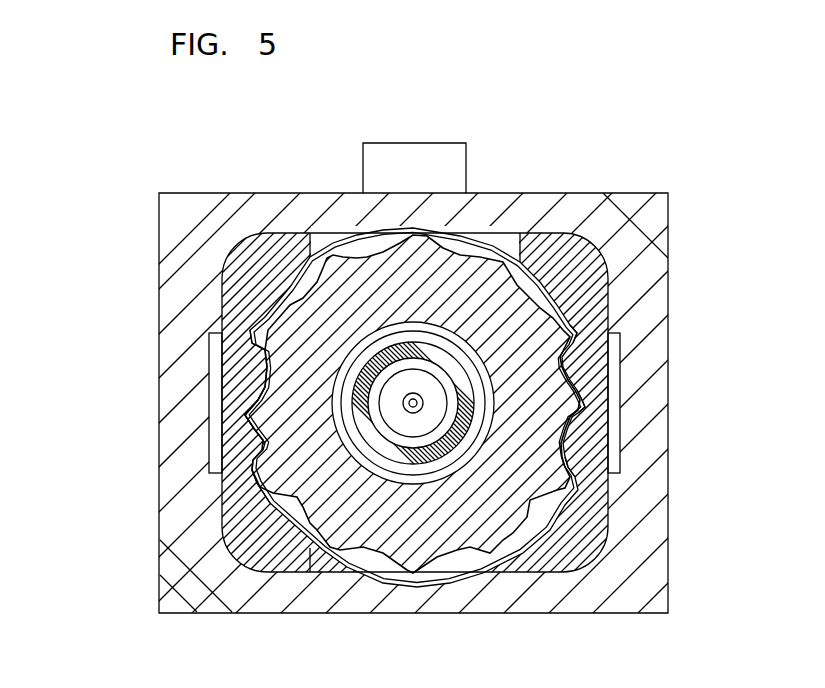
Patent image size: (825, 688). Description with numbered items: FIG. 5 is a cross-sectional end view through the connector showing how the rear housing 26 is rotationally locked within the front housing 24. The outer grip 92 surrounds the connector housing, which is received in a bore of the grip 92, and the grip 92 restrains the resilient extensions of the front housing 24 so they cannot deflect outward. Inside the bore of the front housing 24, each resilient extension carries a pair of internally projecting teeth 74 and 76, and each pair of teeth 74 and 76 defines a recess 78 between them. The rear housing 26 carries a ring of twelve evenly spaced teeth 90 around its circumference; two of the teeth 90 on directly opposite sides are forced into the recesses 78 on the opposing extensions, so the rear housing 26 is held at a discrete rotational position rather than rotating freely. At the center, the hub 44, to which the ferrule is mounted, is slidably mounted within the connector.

The grip 92 is at (182, 212).
The front housing 24 is at (275, 262).
The rear housing 26 is at (453, 290).
The teeth 90 is at (555, 330).
The teeth 74 is at (260, 445).
The teeth 76 is at (570, 447).
The recess 78 is at (245, 403).
The hub 44 is at (393, 452).